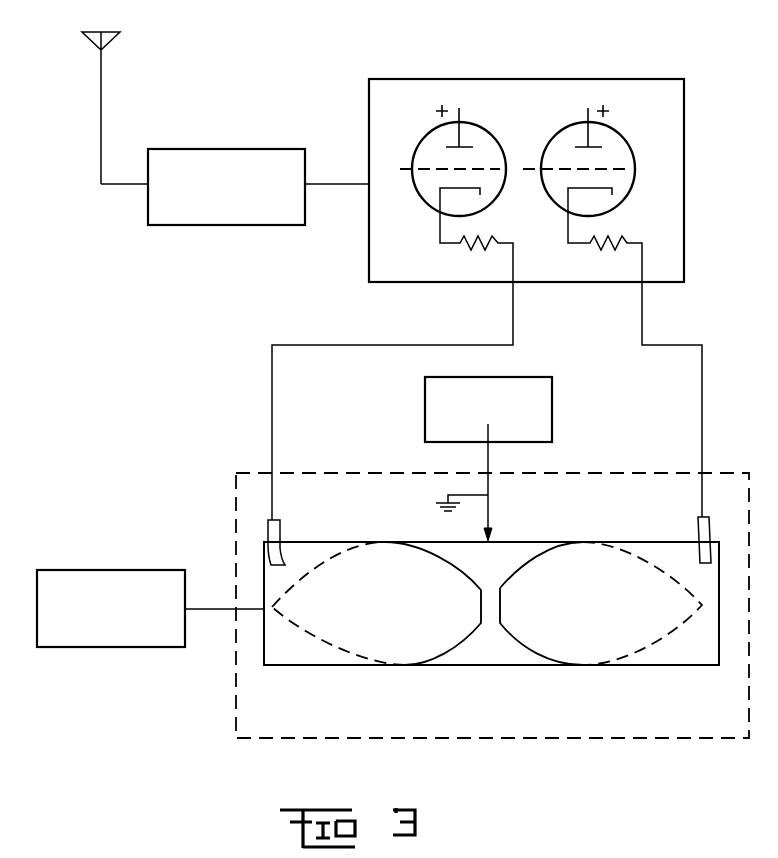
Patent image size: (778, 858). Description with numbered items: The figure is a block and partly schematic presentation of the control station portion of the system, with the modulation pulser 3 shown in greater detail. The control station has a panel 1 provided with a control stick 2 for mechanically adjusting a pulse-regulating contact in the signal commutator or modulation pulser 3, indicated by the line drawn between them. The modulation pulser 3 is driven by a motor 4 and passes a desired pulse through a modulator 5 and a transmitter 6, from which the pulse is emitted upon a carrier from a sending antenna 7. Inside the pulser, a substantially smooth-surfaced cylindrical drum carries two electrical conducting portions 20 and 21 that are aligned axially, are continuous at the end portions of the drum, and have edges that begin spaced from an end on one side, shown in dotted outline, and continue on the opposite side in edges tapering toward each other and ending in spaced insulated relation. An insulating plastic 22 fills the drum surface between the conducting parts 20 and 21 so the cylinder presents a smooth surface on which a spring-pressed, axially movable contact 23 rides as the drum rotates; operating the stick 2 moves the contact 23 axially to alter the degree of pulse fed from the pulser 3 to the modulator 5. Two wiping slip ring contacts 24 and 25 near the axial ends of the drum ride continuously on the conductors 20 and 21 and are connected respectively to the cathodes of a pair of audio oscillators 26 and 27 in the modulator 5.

The panel 1 is at (552, 418).
The control stick 2 is at (488, 424).
The modulation pulser 3 is at (545, 739).
The motor 4 is at (107, 647).
The modulator 5 is at (571, 282).
The transmitter 6 is at (237, 225).
The sending antenna 7 is at (101, 62).
The electrical conducting portion 20 is at (383, 652).
The electrical conducting portion 21 is at (596, 647).
The plastic insulation 22 is at (493, 610).
The movable contact 23 is at (488, 514).
The slip ring contact 24 is at (281, 532).
The slip ring contact 25 is at (698, 524).
The audio oscillator 26 is at (512, 133).
The audio oscillator 27 is at (632, 143).